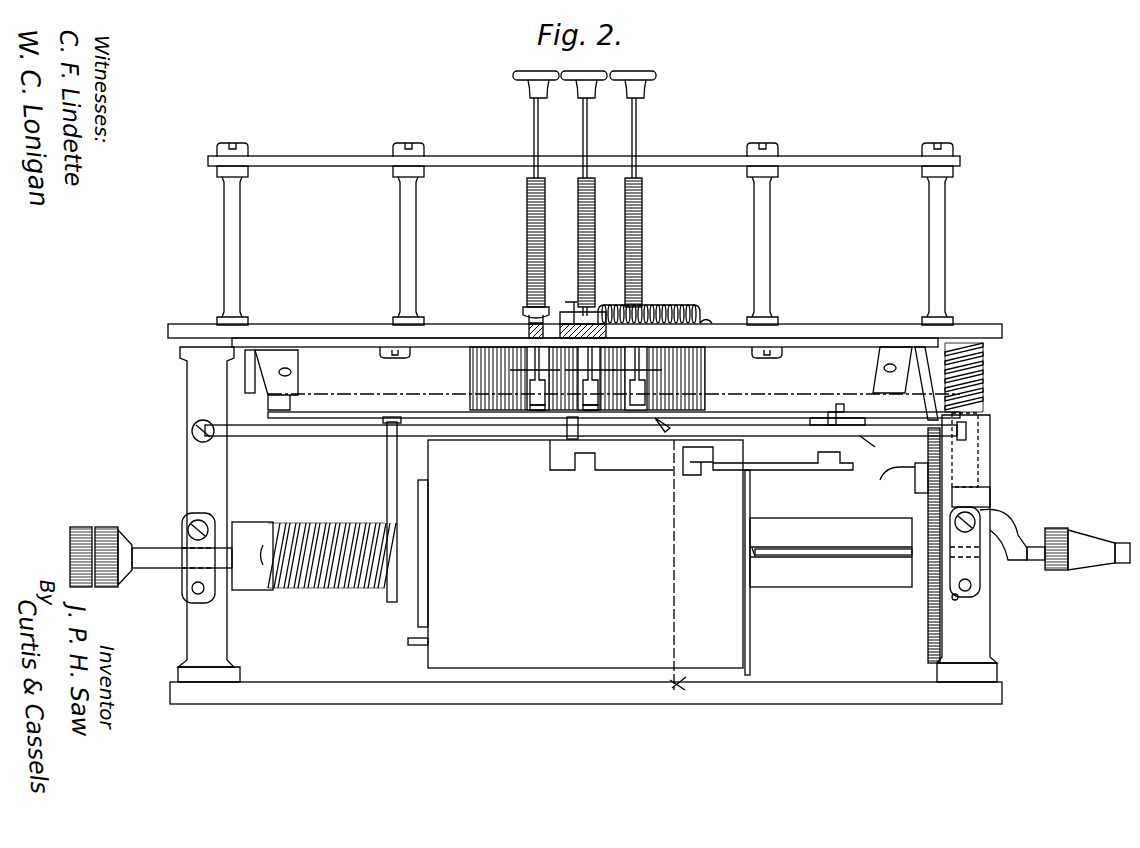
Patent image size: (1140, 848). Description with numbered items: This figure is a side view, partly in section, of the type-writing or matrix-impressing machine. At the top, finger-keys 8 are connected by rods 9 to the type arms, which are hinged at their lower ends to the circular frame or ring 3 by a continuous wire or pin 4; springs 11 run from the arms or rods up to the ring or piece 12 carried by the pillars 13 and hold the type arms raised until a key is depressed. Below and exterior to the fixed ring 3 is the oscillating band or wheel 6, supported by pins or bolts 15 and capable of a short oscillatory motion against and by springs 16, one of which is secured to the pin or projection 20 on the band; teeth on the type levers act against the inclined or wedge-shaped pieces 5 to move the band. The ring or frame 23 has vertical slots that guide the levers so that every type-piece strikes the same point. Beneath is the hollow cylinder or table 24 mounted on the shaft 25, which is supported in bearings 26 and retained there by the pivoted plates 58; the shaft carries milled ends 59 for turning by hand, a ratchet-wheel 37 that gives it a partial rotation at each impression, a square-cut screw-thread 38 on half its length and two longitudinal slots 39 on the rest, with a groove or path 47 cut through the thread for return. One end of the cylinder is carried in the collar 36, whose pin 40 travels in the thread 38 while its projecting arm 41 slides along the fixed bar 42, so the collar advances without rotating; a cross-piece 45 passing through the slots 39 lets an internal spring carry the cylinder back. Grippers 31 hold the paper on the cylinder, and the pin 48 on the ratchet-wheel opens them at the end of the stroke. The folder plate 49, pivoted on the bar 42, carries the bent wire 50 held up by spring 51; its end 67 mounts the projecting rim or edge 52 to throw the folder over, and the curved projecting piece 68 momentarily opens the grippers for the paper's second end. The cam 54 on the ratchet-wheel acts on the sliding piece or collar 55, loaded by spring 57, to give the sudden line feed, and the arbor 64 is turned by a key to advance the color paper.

The circular frame or ring 3 is at (170, 326).
The continuous wire or pin 4 is at (291, 372).
The inclined or wedge-shaped pieces 5 is at (246, 378).
The oscillating band or wheel 6 is at (585, 349).
The finger-keys 8 is at (528, 92).
The rods 9 is at (590, 134).
The springs 11 is at (527, 238).
The ring or piece 12 is at (584, 151).
The pillars 13 is at (589, 234).
The pins or bolts 15 is at (390, 352).
The springs 16 is at (684, 305).
The pin or projection 20 is at (579, 312).
The ring or frame 23 is at (700, 385).
The hollow cylinder or table 24 is at (208, 513).
The shaft 25 is at (845, 524).
The bearings 26 is at (990, 565).
The grippers 31 is at (879, 410).
The collar 36 is at (694, 553).
The ratchet-wheel 37 is at (927, 632).
The square-cut path or screw-thread 38 is at (312, 517).
The longitudinal slots 39 is at (845, 560).
The pin or projection 40 is at (398, 503).
The projecting arm 41 is at (387, 497).
The fixed bar 42 is at (332, 440).
The cross-piece 45 is at (756, 556).
The groove or path 47 is at (306, 588).
The pin or projection 48 is at (880, 490).
The plate 49 is at (701, 455).
The bent piece of wire 50 is at (848, 420).
The spring 51 is at (826, 402).
The projecting rim or edge 52 is at (750, 635).
The cam 54 is at (966, 599).
The sliding piece or collar 55 is at (978, 465).
The spring 57 is at (540, 352).
The pivoted plates 58 is at (190, 578).
The milled ends 59 is at (600, 543).
The arbor 64 is at (408, 642).
The end of the bent wire 67 is at (881, 446).
The curved projecting piece 68 is at (691, 565).